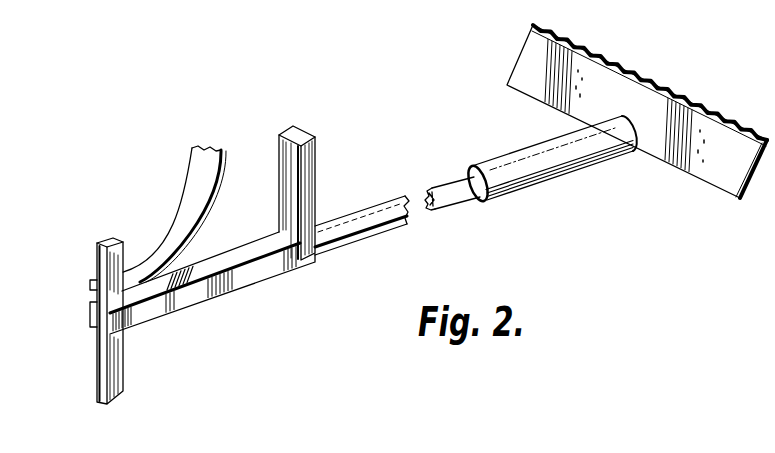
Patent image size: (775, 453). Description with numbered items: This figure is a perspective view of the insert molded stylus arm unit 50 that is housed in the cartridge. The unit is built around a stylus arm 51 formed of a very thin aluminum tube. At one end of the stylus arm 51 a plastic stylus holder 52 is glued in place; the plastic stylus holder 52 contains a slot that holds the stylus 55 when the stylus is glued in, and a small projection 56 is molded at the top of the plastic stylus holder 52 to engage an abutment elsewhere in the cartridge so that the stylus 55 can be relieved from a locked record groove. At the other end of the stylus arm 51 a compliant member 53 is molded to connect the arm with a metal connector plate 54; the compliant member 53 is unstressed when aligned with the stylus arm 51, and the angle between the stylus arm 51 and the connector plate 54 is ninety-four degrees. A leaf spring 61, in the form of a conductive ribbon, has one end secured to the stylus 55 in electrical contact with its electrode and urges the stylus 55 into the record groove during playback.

The insert molded stylus arm unit 50 is at (335, 126).
The stylus arm 51 is at (362, 221).
The plastic stylus holder 52 is at (183, 303).
The compliant member 53 is at (563, 176).
The metal connector plate 54 is at (722, 180).
The stylus 55 is at (101, 353).
The small projection 56 is at (318, 176).
The leaf spring 61 is at (174, 214).